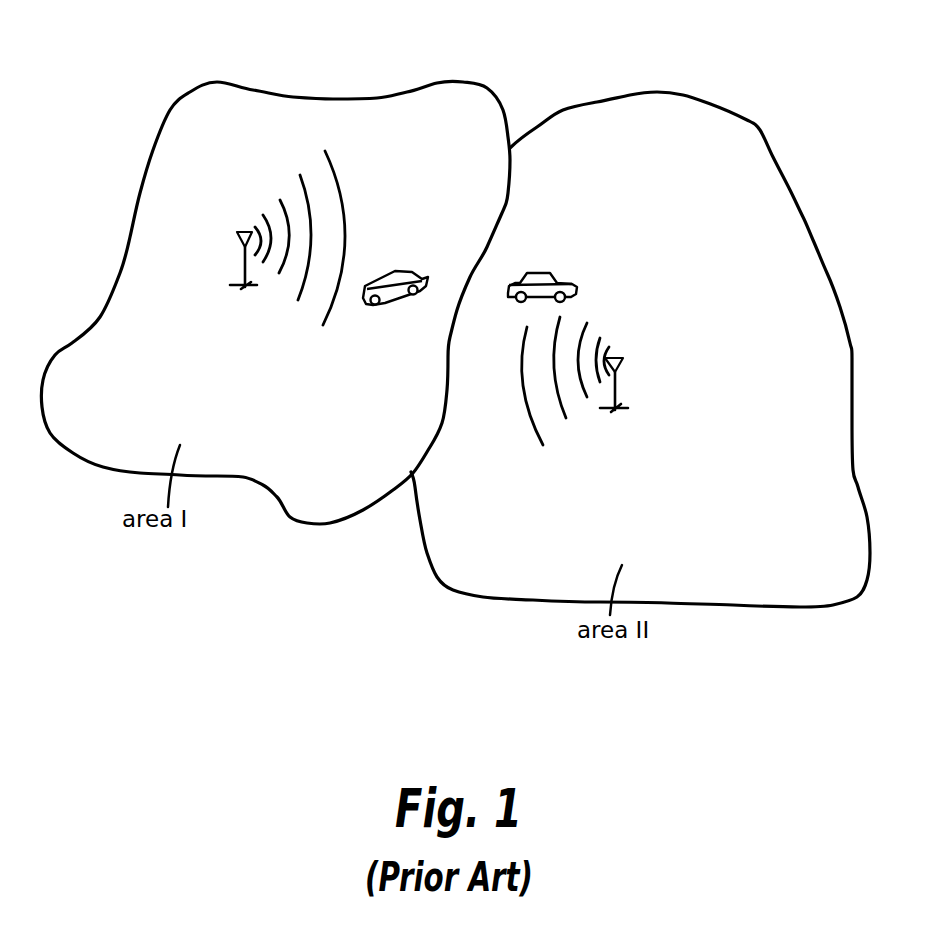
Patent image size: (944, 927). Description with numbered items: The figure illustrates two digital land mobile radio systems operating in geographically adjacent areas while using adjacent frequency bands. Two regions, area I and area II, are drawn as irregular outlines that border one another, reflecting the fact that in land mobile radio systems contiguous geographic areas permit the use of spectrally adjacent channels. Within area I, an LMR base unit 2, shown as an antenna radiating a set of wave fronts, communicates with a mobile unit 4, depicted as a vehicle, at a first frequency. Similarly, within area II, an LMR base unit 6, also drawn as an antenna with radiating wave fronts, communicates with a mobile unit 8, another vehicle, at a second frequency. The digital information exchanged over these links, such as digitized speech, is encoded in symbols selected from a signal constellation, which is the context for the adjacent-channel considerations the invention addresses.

The LMR base unit 2 is at (243, 262).
The mobile unit 4 is at (374, 267).
The LMR base unit 6 is at (618, 380).
The mobile unit 8 is at (520, 262).